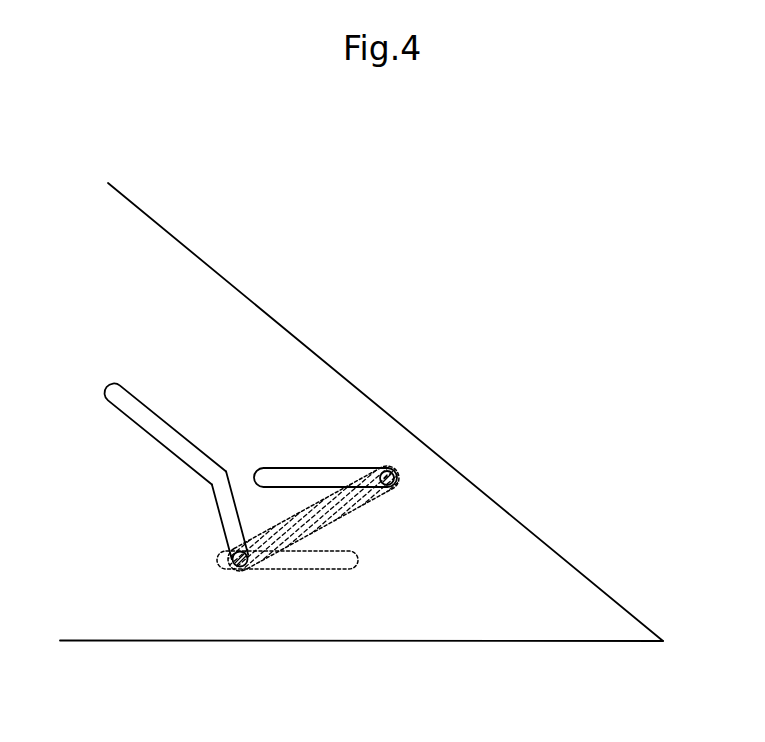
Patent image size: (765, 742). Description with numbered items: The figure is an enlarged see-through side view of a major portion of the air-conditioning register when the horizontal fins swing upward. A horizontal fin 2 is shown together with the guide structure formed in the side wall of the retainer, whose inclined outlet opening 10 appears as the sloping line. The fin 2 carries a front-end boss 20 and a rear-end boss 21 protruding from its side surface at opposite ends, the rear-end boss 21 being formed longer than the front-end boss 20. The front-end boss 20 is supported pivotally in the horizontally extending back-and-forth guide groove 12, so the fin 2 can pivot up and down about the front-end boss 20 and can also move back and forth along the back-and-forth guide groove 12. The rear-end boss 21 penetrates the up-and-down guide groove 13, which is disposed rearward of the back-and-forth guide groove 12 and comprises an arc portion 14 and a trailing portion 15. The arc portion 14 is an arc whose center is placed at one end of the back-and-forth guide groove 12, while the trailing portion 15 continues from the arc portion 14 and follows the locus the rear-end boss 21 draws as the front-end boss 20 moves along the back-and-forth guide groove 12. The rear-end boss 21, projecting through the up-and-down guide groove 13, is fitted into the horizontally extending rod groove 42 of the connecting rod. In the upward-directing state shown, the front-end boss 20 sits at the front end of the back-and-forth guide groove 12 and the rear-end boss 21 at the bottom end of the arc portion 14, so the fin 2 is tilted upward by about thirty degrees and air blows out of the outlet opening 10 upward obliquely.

The horizontal fin 2 is at (308, 537).
The outlet opening 10 is at (498, 503).
The back-and-forth guide groove 12 is at (305, 479).
The up-and-down guide groove 13 is at (150, 458).
The arc portion 14 is at (163, 466).
The trailing portion 15 is at (158, 430).
The front-end boss 20 is at (391, 470).
The rear-end boss 21 is at (232, 569).
The rod groove 42 is at (350, 568).